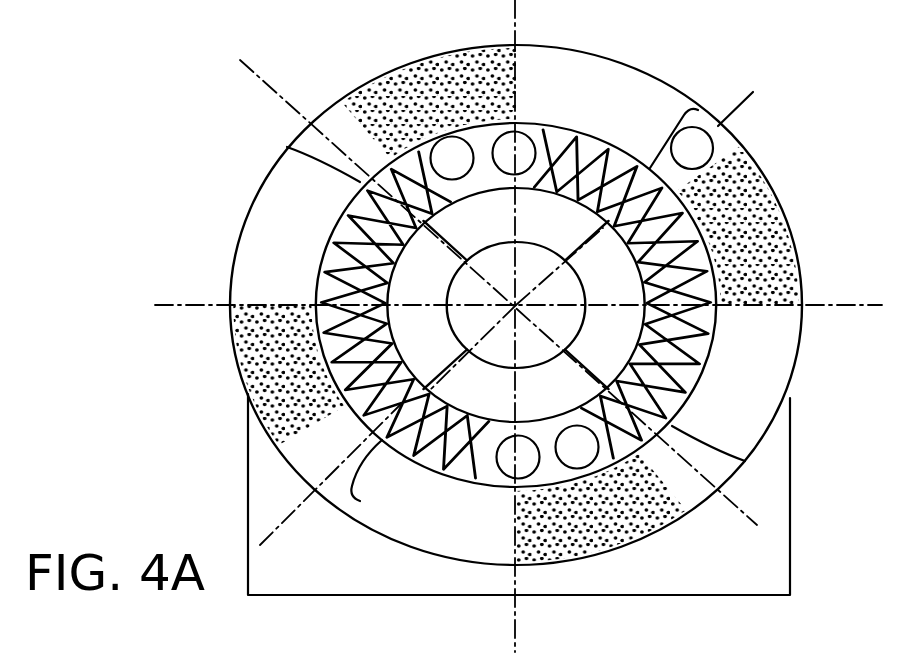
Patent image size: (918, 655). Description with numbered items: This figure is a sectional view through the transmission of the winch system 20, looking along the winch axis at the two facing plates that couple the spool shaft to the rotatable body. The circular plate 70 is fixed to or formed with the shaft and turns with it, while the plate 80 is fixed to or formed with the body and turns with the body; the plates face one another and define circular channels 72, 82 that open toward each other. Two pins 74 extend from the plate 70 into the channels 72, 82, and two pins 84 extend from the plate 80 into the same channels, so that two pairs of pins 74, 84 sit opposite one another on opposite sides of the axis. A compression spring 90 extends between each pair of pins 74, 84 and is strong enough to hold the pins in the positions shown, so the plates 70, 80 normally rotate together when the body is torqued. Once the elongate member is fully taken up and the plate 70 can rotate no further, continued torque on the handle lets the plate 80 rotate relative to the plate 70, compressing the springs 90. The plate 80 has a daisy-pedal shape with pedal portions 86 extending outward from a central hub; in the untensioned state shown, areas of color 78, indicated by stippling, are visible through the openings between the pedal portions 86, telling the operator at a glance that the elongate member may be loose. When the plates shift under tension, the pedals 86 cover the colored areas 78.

The winch system 20 is at (214, 209).
The plate 70 is at (377, 78).
The circular channel 72 is at (492, 387).
The pins 74 is at (521, 147).
The areas of color 78 is at (767, 240).
The plate 80 is at (627, 97).
The circular channel 82 is at (462, 470).
The pins 84 is at (450, 156).
The pedal portions 86 is at (767, 363).
The compression spring 90 is at (277, 174).